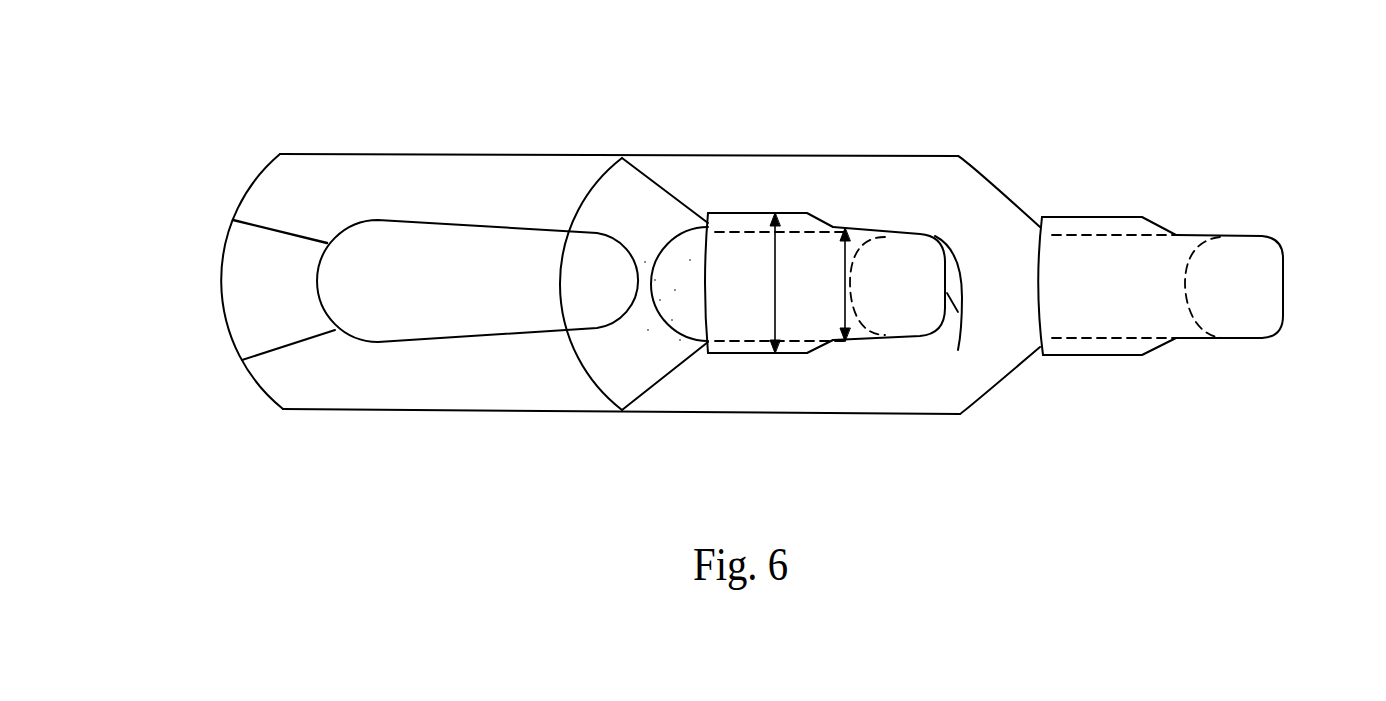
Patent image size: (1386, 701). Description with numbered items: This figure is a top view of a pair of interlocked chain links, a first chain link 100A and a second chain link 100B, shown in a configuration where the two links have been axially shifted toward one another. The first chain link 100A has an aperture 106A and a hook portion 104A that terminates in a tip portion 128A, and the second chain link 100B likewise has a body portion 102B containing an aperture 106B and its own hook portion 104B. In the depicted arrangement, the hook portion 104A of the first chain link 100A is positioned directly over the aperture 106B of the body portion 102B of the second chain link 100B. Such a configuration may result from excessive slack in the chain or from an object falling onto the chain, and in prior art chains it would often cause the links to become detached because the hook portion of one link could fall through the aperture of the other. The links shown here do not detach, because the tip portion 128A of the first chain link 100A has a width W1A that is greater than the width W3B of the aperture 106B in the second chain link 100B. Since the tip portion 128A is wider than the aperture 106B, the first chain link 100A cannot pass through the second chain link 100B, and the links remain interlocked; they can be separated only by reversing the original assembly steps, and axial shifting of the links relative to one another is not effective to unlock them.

The first chain link 100A is at (445, 128).
The aperture 106A is at (387, 313).
The tip portion 128A is at (745, 223).
The hook portion 104A is at (835, 262).
The width of tip portion W1A is at (773, 315).
The width of aperture W3B is at (847, 288).
The body portion 102B is at (835, 392).
The aperture 106B is at (958, 350).
The second chain link 100B is at (1033, 158).
The hook portion 104B is at (1158, 278).